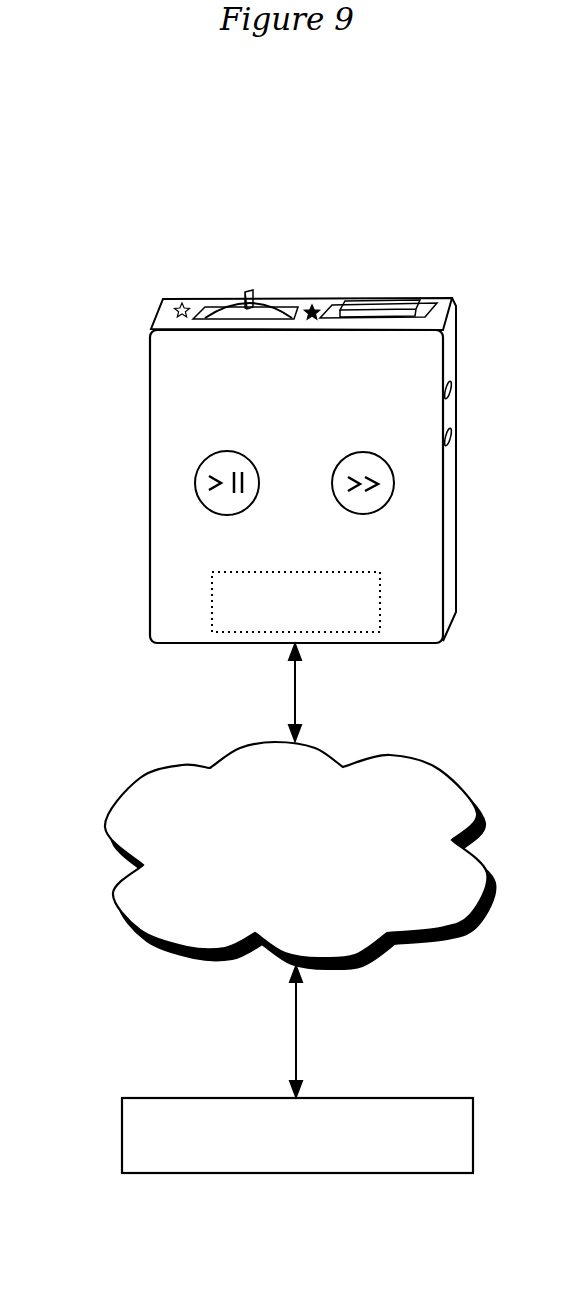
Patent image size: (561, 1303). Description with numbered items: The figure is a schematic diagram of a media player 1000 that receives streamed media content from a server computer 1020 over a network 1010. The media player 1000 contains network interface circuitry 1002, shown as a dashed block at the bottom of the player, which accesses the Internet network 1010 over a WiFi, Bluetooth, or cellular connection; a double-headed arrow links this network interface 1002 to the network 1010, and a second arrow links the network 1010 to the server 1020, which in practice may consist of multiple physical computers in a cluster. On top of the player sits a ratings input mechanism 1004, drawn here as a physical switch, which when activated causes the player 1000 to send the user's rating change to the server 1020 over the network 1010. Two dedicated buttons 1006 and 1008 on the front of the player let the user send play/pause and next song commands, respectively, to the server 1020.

The media player 1000 is at (150, 512).
The network interface circuitry 1002 is at (205, 602).
The ratings input mechanism 1004 is at (227, 300).
The play/pause button 1006 is at (220, 512).
The next song button 1008 is at (365, 450).
The network 1010 is at (100, 828).
The server computer 1020 is at (122, 1143).